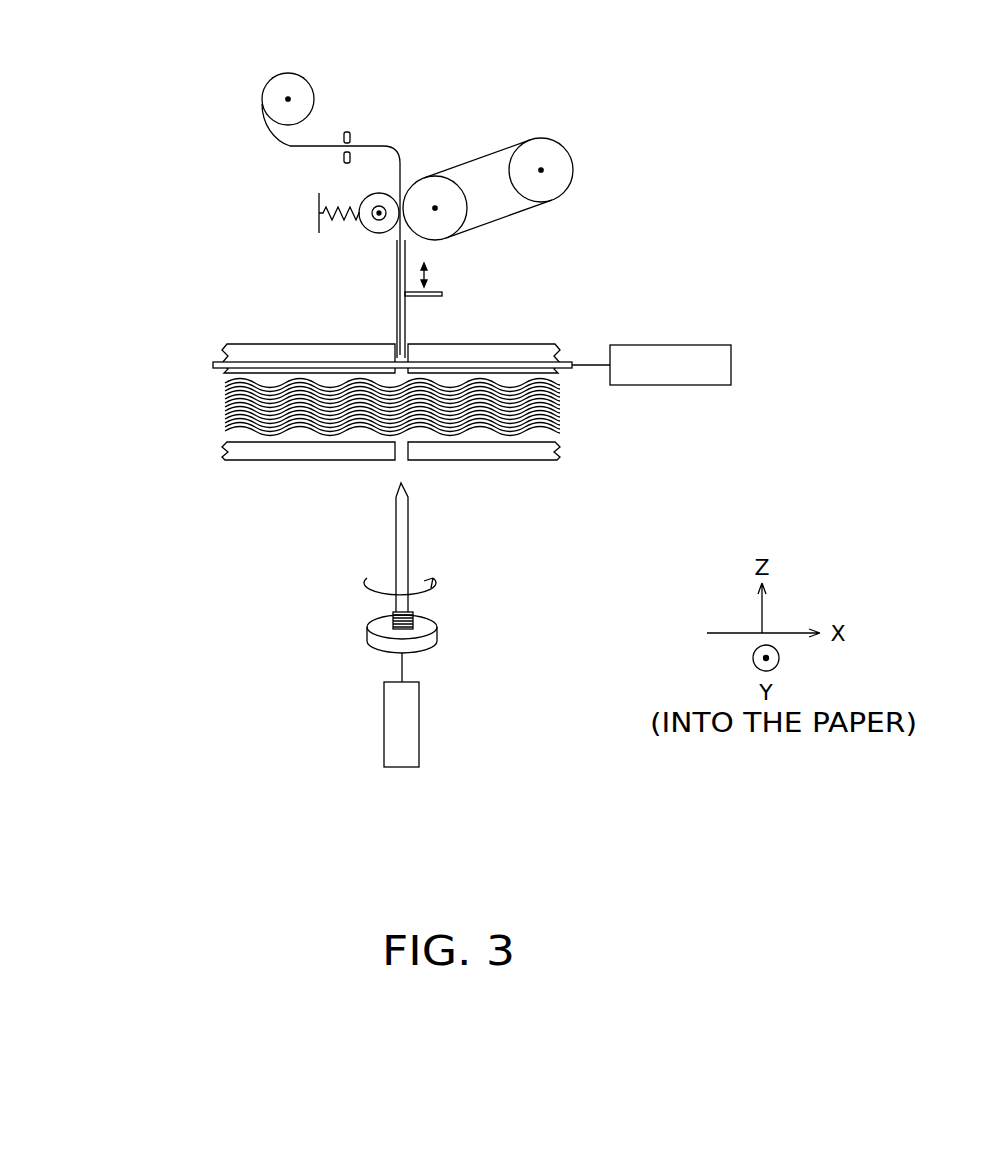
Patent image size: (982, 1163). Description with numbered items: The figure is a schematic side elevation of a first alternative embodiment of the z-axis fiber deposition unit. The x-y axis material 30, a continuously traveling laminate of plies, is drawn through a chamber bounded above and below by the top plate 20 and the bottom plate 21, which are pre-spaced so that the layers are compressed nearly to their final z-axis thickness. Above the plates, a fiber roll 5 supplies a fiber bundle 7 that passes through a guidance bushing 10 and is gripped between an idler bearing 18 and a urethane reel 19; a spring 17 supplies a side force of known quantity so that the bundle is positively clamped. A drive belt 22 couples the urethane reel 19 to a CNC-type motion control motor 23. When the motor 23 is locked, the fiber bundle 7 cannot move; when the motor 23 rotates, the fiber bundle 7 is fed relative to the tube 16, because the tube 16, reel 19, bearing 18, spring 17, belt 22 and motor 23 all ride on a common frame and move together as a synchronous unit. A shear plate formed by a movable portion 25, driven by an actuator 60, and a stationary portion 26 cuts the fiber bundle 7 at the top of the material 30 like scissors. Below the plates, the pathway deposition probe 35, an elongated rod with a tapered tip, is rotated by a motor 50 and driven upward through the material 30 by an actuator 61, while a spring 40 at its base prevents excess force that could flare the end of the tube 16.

The fiber roll 5 is at (314, 91).
The fiber bundle 7 is at (290, 148).
The guidance bushing 10 is at (350, 128).
The tube 16 is at (405, 318).
The spring 17 is at (337, 224).
The idler bearing 18 is at (373, 234).
The urethane reel 19 is at (440, 231).
The top plate 20 is at (517, 345).
The bottom plate 21 is at (570, 453).
The drive belt 22 is at (473, 160).
The motion control motor 23 is at (569, 152).
The movable shear plate 25 is at (213, 365).
The stationary shear plate 26 is at (225, 372).
The x-y axis material 30 is at (565, 407).
The pathway deposition probe 35 is at (413, 519).
The spring 40 is at (390, 622).
The motor 50 is at (437, 633).
The actuator 60 is at (692, 345).
The actuator 61 is at (383, 723).